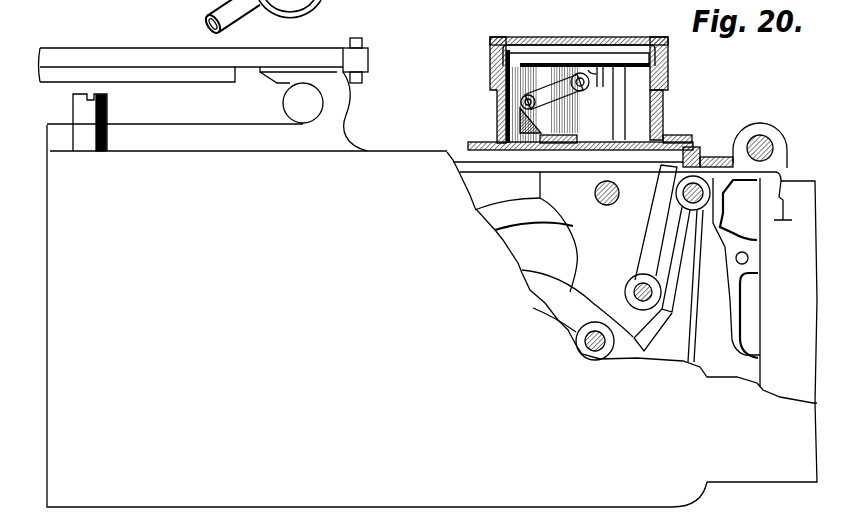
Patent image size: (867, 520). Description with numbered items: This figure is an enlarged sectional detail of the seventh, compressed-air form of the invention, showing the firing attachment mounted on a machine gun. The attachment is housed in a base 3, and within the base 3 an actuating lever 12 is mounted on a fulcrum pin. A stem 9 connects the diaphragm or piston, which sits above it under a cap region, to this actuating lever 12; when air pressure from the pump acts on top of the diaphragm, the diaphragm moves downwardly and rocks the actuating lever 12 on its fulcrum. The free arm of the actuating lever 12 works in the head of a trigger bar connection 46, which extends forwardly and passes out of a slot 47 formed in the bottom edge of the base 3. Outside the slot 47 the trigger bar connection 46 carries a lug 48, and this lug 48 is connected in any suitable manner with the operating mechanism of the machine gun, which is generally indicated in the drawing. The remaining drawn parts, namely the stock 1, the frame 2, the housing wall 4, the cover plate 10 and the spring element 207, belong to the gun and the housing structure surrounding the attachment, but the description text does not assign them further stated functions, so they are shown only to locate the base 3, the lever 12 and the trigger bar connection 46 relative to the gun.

The stock 1 is at (762, 331).
The frame 2 is at (403, 167).
The base 3 is at (671, 102).
The magazine housing 4 is at (664, 60).
The stem 9 is at (589, 72).
The cover plate 10 is at (572, 31).
The actuating lever 12 is at (562, 99).
The trigger bar connection 46 is at (607, 147).
The slot 47 is at (676, 140).
The lug 48 is at (700, 148).
The spring 207 is at (608, 47).